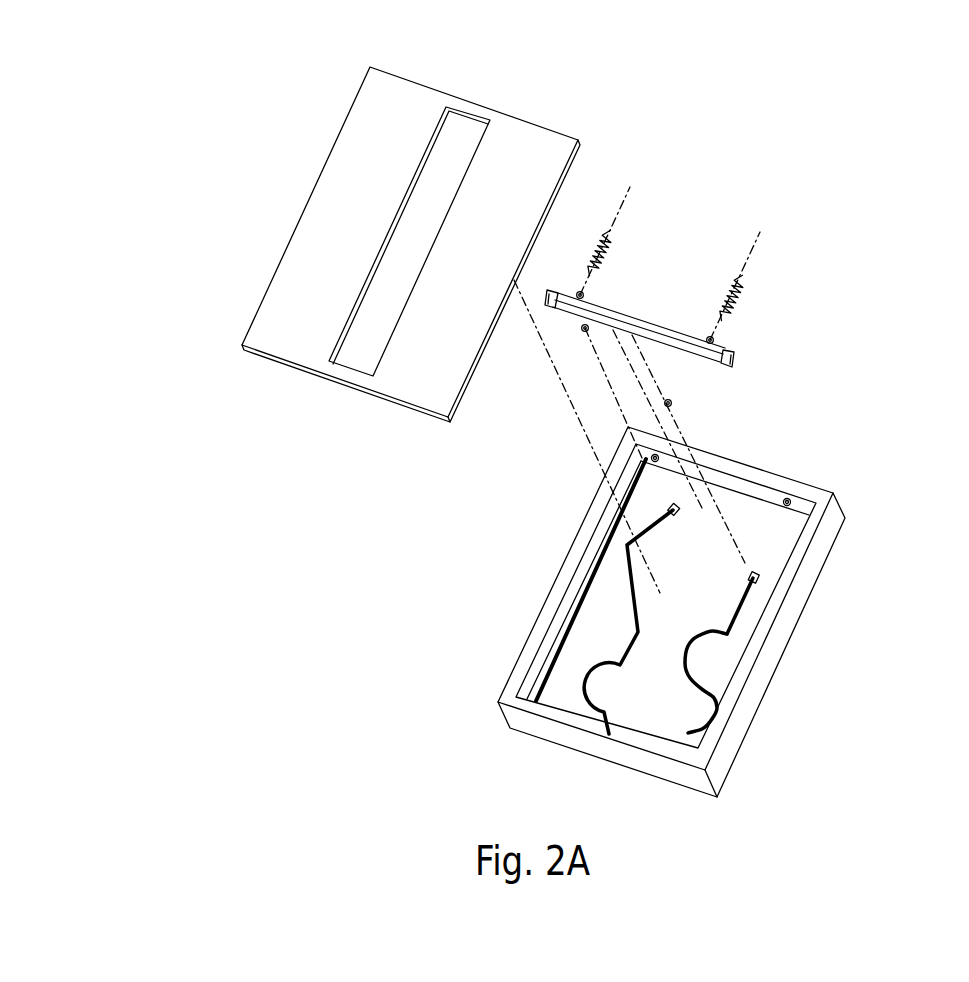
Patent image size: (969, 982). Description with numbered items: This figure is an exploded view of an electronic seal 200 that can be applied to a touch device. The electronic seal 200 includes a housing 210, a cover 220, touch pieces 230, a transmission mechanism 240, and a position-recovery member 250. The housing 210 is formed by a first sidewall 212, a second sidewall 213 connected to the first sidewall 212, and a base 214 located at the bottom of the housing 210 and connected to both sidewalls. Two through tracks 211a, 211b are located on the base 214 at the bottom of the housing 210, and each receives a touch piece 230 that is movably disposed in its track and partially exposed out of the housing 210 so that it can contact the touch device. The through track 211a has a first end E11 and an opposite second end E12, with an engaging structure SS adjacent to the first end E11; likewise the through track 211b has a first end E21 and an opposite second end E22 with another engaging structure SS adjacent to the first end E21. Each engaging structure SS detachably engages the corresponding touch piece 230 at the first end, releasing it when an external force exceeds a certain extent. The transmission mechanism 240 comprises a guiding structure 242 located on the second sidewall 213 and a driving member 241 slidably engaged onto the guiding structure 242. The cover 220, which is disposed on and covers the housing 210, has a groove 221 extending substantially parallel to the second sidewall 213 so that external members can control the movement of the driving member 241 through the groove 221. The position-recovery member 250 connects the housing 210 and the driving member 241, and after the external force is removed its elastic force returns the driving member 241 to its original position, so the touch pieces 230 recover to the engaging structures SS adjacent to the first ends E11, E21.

The electronic seal 200 is at (106, 43).
The housing 210 is at (661, 603).
The through track 211a is at (750, 638).
The through track 211b is at (527, 608).
The first sidewall 212 is at (760, 492).
The second sidewall 213 is at (587, 525).
The base 214 is at (587, 648).
The cover 220 is at (384, 244).
The groove 221 is at (387, 232).
The touch piece 230 is at (673, 402).
The transmission mechanism 240 is at (711, 281).
The driving member 241 is at (733, 362).
The guiding structure 242 is at (577, 590).
The position-recovery member 250 is at (739, 298).
The first end E11 is at (757, 577).
The second end E12 is at (688, 731).
The first end E21 is at (673, 512).
The second end E22 is at (607, 730).
The engaging structure SS is at (673, 510).